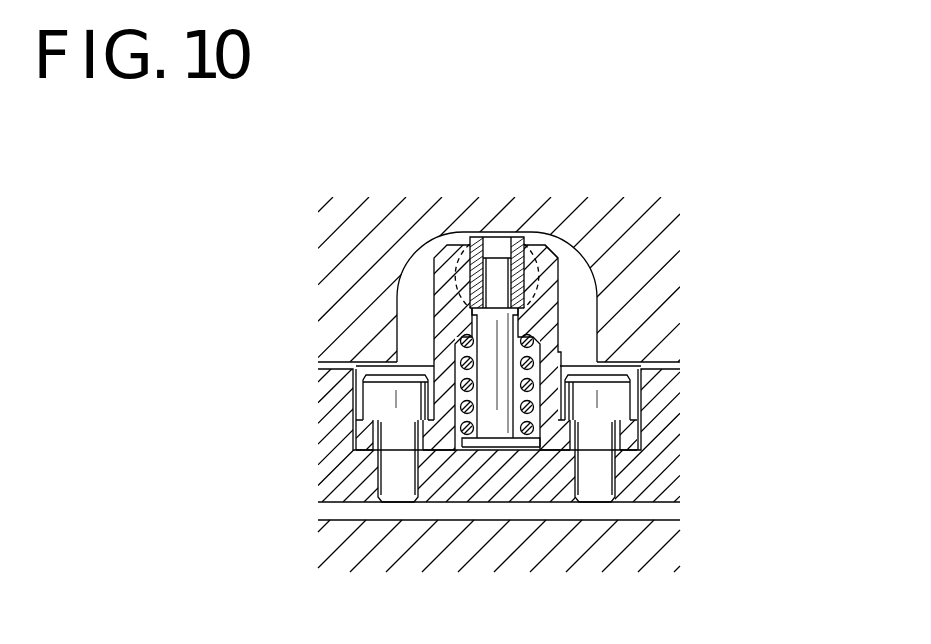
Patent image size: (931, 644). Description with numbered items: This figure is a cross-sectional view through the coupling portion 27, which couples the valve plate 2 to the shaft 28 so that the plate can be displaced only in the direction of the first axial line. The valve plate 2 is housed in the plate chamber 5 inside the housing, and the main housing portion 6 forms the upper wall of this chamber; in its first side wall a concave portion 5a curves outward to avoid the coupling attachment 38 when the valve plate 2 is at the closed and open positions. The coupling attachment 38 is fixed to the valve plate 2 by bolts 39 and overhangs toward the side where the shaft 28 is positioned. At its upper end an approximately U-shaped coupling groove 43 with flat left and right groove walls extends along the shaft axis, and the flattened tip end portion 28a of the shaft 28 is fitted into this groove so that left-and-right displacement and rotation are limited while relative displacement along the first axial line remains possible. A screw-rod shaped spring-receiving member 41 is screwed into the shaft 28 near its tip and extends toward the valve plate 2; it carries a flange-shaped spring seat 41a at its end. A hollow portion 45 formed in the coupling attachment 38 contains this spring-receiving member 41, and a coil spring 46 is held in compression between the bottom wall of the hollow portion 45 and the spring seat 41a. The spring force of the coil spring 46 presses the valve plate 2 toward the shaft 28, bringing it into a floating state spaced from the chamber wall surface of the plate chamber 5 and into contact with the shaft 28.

The valve plate 2 is at (653, 463).
The plate chamber 5 is at (653, 518).
The concave portion 5a is at (408, 297).
The main housing portion 6 is at (362, 230).
The coupling portion 27 is at (570, 187).
The shaft 28 is at (572, 262).
The tip end portion 28a is at (517, 236).
The coupling attachment 38 is at (545, 272).
The bolts 39 is at (396, 475).
The spring-receiving member 41 is at (490, 415).
The spring seat 41a is at (521, 445).
The coupling groove 43 is at (463, 243).
The hollow portion 45 is at (461, 342).
The coil spring 46 is at (462, 385).